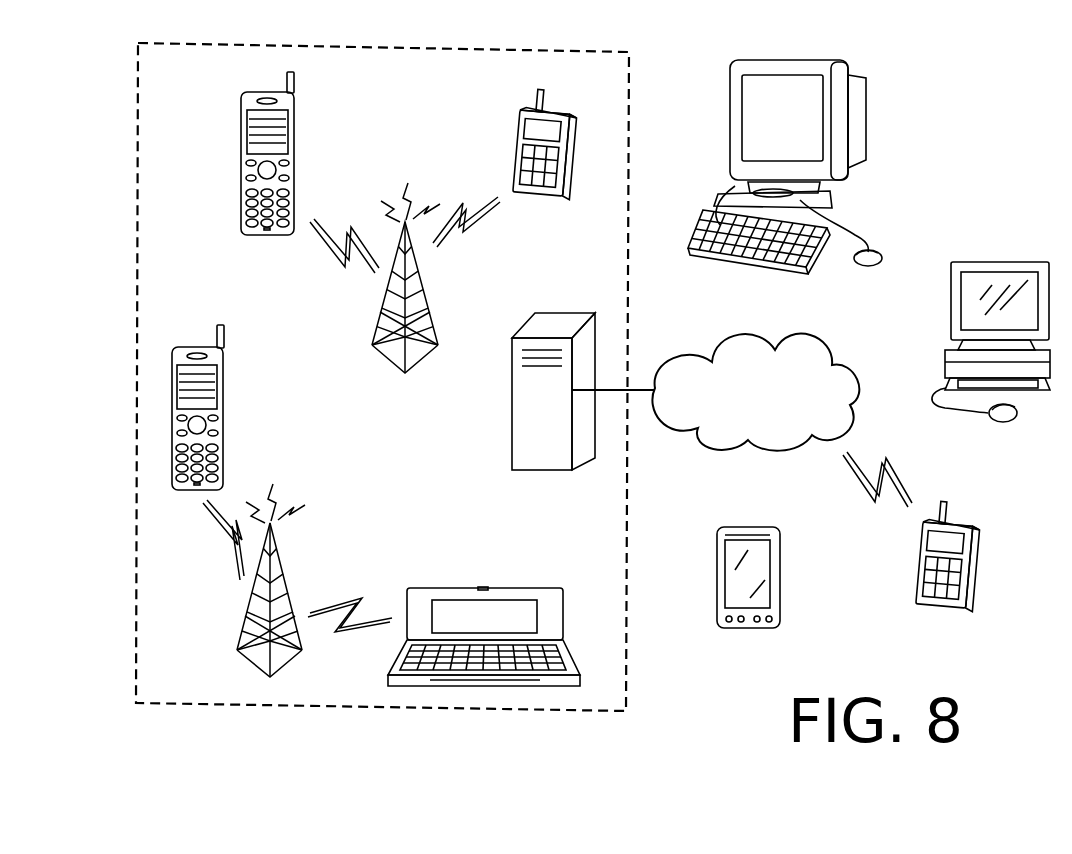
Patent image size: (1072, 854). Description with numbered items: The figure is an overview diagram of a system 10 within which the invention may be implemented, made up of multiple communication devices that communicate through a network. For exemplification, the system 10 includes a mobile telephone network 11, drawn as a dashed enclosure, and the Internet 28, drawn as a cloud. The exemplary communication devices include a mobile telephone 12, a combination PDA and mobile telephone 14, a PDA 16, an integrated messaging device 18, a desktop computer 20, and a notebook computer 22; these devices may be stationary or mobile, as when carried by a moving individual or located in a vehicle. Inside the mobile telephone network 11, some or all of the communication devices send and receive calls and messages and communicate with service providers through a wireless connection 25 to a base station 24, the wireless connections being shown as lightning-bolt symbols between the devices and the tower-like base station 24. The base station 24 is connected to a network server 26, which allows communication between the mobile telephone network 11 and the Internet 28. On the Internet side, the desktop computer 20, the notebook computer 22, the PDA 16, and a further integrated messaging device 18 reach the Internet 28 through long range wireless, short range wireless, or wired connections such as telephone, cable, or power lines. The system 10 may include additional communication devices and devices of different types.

The system 10 is at (1038, 483).
The mobile telephone network 11 is at (179, 82).
The mobile telephone 12 is at (297, 159).
The combination PDA and mobile telephone 14 is at (485, 592).
The PDA 16 is at (781, 575).
The integrated messaging device 18 is at (516, 149).
The desktop computer 20 is at (866, 109).
The notebook computer 22 is at (997, 262).
The base station 24 is at (418, 290).
The wireless connection 25 is at (224, 568).
The network server 26 is at (512, 405).
The Internet 28 is at (795, 334).